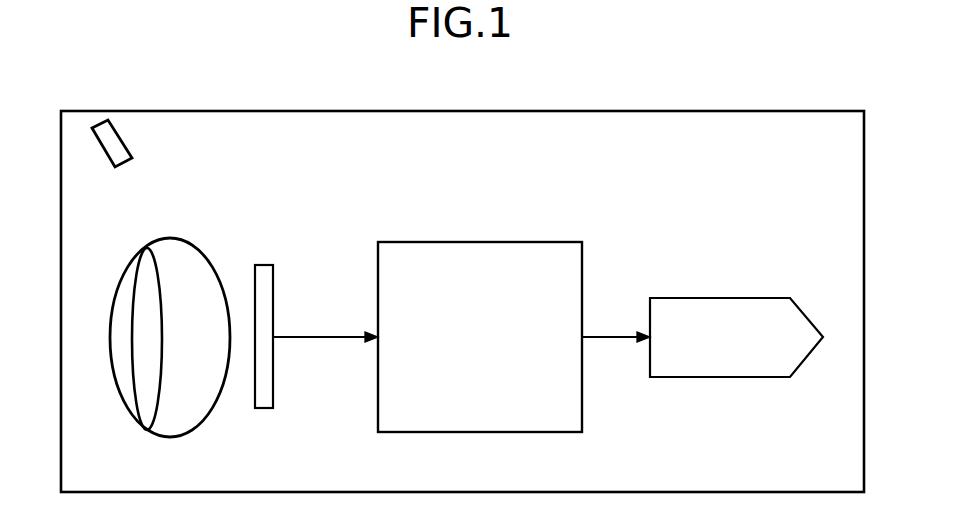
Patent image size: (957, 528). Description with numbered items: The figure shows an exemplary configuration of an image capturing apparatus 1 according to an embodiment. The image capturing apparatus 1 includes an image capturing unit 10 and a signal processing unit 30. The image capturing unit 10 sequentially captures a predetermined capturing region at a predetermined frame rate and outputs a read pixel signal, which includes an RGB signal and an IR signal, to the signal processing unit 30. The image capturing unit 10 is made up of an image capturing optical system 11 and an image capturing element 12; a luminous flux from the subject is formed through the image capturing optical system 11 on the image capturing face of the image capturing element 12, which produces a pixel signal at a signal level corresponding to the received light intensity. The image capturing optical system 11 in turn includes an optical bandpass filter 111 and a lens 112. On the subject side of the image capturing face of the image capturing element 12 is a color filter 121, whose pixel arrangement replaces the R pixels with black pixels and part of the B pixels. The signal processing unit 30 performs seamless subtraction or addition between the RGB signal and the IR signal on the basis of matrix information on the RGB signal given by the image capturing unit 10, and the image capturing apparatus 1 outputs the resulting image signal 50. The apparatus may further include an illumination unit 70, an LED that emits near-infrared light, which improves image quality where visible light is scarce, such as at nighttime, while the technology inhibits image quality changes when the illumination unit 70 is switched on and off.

The image capturing apparatus 1 is at (804, 111).
The image capturing unit 10 is at (288, 189).
The image capturing optical system 11 is at (164, 337).
The image capturing element 12 is at (267, 337).
The signal processing unit 30 is at (547, 242).
The image signal 50 is at (754, 298).
The illumination unit 70 is at (123, 131).
The optical bandpass filter 111 is at (158, 408).
The lens 112 is at (205, 417).
The color filter 121 is at (253, 393).